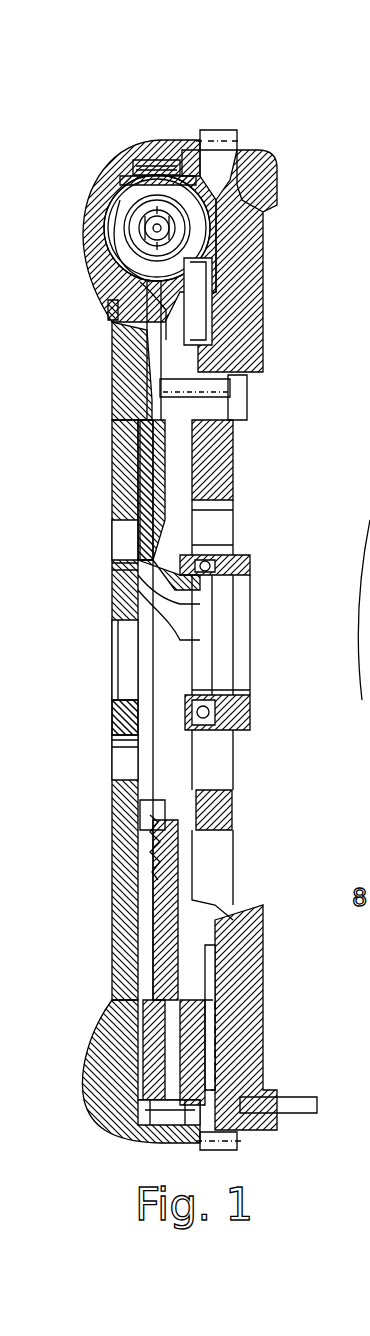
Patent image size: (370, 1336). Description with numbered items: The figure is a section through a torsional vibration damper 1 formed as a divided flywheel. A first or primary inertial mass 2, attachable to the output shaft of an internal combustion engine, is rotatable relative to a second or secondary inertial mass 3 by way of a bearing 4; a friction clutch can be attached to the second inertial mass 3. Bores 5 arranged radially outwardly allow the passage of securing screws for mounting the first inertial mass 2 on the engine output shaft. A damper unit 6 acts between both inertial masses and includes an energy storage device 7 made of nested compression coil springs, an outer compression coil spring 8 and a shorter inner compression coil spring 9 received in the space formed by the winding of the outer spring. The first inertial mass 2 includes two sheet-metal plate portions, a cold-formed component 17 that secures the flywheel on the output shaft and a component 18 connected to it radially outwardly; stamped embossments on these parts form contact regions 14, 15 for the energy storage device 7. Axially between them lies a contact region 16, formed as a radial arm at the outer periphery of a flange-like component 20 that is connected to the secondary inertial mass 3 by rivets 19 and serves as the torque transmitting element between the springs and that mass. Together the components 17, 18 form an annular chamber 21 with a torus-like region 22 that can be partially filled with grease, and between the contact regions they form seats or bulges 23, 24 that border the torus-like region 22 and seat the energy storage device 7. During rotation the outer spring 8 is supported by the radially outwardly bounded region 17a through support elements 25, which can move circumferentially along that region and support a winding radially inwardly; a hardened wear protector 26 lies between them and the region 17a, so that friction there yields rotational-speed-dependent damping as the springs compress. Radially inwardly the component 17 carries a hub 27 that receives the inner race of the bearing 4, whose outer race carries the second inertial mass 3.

The torsional vibration damper 1 is at (264, 132).
The first inertial mass 2 is at (116, 456).
The second inertial mass 3 is at (240, 326).
The bearing 4 is at (215, 732).
The bores 5 is at (122, 768).
The damper unit 6 is at (92, 224).
The energy storage device 7 is at (128, 254).
The compression coil spring 8 is at (118, 240).
The compression coil spring 9 is at (142, 262).
The contact region 14 is at (114, 1094).
The contact region 15 is at (200, 1060).
The contact region 16 is at (165, 288).
The component 17 is at (122, 948).
The radially outwardly bounded region 17a is at (148, 170).
The component 18 is at (198, 997).
The rivets 19 is at (215, 394).
The flange-like component 20 is at (165, 352).
The annular chamber 21 is at (200, 295).
The torus-like region 22 is at (165, 228).
The seat 23 is at (205, 214).
The seat 24 is at (112, 178).
The support element 25 is at (172, 170).
The wear protector 26 is at (158, 172).
The hub 27 is at (140, 592).